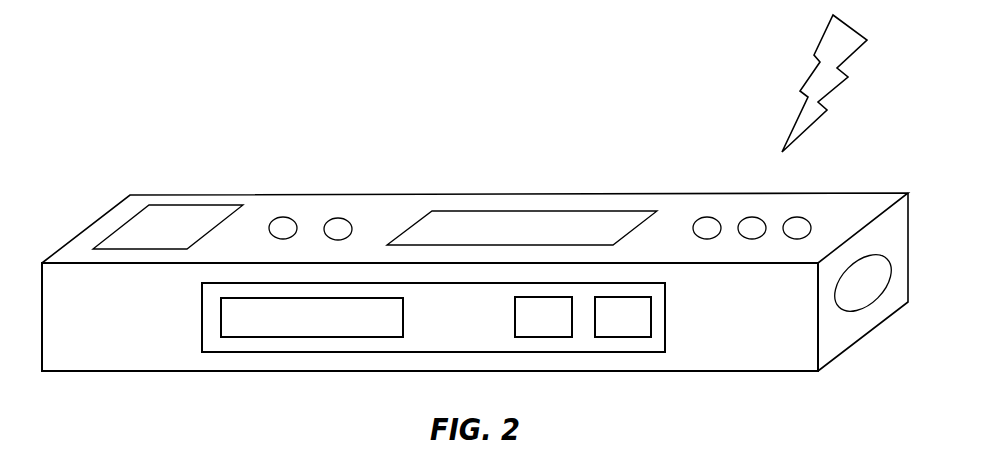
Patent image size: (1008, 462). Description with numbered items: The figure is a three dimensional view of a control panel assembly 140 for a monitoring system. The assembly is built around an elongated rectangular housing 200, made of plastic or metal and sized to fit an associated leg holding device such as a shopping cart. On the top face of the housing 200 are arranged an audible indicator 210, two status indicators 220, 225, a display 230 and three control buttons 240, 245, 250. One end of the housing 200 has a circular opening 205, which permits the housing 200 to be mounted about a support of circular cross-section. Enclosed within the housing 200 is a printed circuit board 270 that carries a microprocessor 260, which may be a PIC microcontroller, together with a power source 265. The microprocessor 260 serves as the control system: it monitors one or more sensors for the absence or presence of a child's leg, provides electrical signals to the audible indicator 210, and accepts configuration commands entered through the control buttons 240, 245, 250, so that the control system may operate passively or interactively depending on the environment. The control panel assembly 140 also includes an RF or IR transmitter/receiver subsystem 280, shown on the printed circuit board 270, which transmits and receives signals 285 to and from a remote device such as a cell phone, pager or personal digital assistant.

The control panel assembly 140 is at (121, 153).
The housing 200 is at (170, 371).
The circular opening 205 is at (867, 287).
The audible indicator 210 is at (180, 210).
The status indicator 220 is at (283, 216).
The status indicator 225 is at (348, 220).
The display 230 is at (508, 211).
The control button 240 is at (702, 218).
The control button 245 is at (752, 218).
The control button 250 is at (802, 218).
The microprocessor 260 is at (287, 328).
The power source 265 is at (528, 328).
The printed circuit board 270 is at (447, 328).
The RF or IR transmitter/receiver subsystem 280 is at (608, 328).
The signals 285 is at (812, 75).